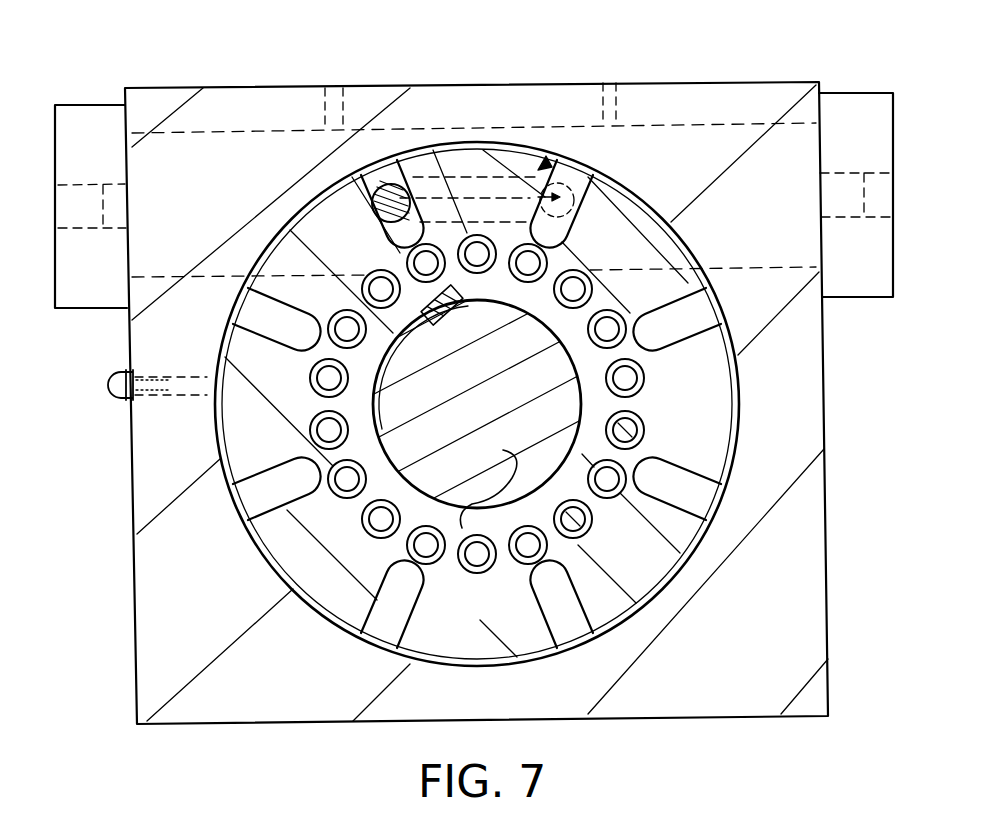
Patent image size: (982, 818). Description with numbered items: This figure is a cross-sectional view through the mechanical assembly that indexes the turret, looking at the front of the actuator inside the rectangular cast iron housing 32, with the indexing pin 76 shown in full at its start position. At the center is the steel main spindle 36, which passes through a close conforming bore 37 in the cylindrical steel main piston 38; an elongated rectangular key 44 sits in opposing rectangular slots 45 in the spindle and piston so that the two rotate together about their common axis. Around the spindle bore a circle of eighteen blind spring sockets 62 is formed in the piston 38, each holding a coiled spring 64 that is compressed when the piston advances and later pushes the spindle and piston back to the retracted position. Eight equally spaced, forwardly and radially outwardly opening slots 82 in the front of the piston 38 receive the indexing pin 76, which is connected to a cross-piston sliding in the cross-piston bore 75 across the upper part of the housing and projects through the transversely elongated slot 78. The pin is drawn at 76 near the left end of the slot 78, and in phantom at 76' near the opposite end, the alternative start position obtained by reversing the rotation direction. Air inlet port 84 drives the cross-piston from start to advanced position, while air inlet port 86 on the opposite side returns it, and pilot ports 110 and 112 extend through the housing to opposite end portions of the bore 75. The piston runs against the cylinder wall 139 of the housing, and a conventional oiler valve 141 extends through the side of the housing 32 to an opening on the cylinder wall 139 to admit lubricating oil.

The housing 32 is at (801, 440).
The main spindle 36 is at (531, 406).
The bore 37 is at (488, 485).
The main piston 38 is at (634, 622).
The key 44 is at (500, 288).
The rectangular slots 45 is at (442, 326).
The spring sockets 62 is at (650, 417).
The coiled springs 64 is at (580, 519).
The cross-piston bore 75 is at (233, 135).
The indexing pin 76 is at (418, 127).
The indexing pin (alternate position) 76' is at (619, 128).
The elongated slot 78 is at (470, 222).
The slots 82 is at (384, 233).
The air inlet port 84 is at (864, 217).
The air inlet port 86 is at (103, 228).
The pilot port 110 is at (340, 88).
The pilot port 112 is at (606, 83).
The cylinder wall 139 is at (234, 500).
The oiler valve 141 is at (173, 397).